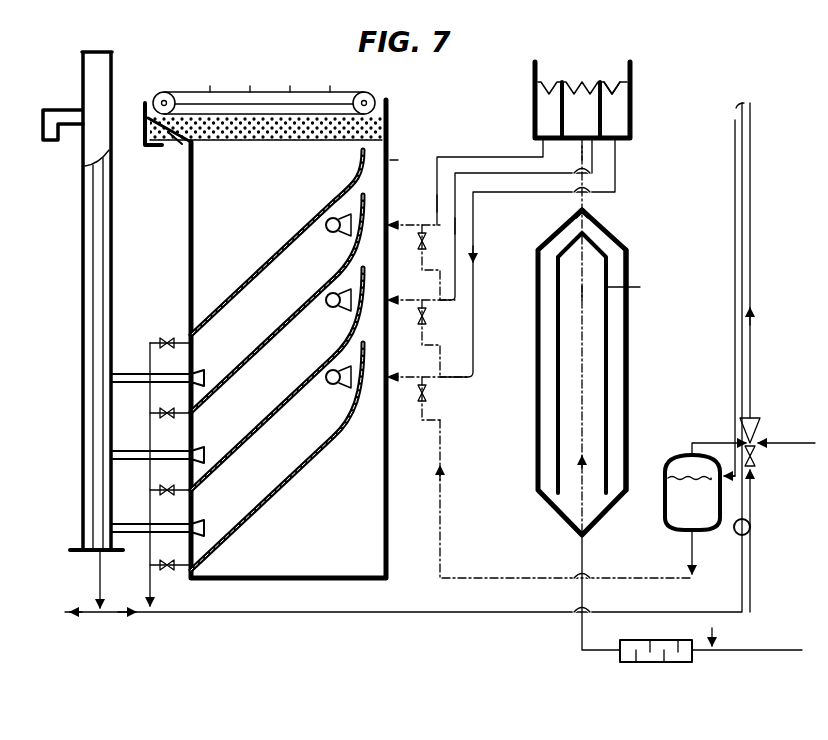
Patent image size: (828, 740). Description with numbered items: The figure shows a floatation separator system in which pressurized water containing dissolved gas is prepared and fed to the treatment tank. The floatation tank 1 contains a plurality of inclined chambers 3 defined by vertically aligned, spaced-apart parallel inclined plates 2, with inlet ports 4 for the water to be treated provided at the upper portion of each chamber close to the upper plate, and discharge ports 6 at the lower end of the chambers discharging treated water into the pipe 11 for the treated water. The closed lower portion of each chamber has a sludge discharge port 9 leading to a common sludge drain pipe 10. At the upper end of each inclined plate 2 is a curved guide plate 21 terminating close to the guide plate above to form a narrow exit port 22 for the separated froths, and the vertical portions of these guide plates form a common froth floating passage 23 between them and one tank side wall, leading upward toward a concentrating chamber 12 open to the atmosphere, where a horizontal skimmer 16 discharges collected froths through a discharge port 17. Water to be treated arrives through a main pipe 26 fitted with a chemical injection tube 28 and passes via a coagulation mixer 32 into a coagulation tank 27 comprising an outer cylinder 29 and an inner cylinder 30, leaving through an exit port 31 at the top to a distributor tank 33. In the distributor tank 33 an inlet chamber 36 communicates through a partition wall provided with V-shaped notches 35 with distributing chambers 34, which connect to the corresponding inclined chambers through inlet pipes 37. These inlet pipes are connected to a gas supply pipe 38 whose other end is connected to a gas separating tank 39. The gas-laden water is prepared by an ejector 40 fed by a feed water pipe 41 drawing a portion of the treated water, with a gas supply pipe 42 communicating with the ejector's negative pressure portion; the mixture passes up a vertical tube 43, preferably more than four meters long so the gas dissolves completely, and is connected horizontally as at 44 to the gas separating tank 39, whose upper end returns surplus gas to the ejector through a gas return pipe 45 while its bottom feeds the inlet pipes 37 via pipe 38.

The floatation tank 1 is at (348, 582).
The inclined plates 2 is at (246, 290).
The inclined chambers 3 is at (266, 331).
The inlet ports 4 is at (325, 234).
The discharge ports 6 is at (210, 370).
The sludge discharge port 9 is at (176, 345).
The sludge drain pipe 10 is at (148, 598).
The pipe for the treated water 11 is at (81, 480).
The concentrating chamber 12 is at (258, 150).
The horizontal skimmer 16 is at (218, 91).
The discharge port for the froths 17 is at (150, 145).
The curved guide plate 21 is at (388, 152).
The narrow exit port 22 is at (366, 190).
The common froth floating passage 23 is at (366, 275).
The main pipe 26 is at (768, 651).
The coagulation tank 27 is at (538, 448).
The chemical injection tube 28 is at (712, 630).
The outer cylinder 29 is at (628, 335).
The inner cylinder 30 is at (614, 363).
The exit port 31 is at (590, 215).
The coagulation mixer 32 is at (650, 662).
The distributor tank 33 is at (632, 90).
The distributing chamber 34 is at (620, 121).
The weir notch 35 is at (610, 82).
The distribution tank 36 is at (540, 122).
The inlet pipes 37 is at (437, 172).
The gas supply pipe 38 is at (440, 448).
The gas separating tank 39 is at (692, 528).
The ejector 40 is at (760, 424).
The feed water pipe 41 is at (751, 478).
The gas supply pipe 42 is at (795, 444).
The vertical tube 43 is at (750, 154).
The horizontal end connection 44 is at (726, 477).
The gas return pipe 45 is at (710, 443).